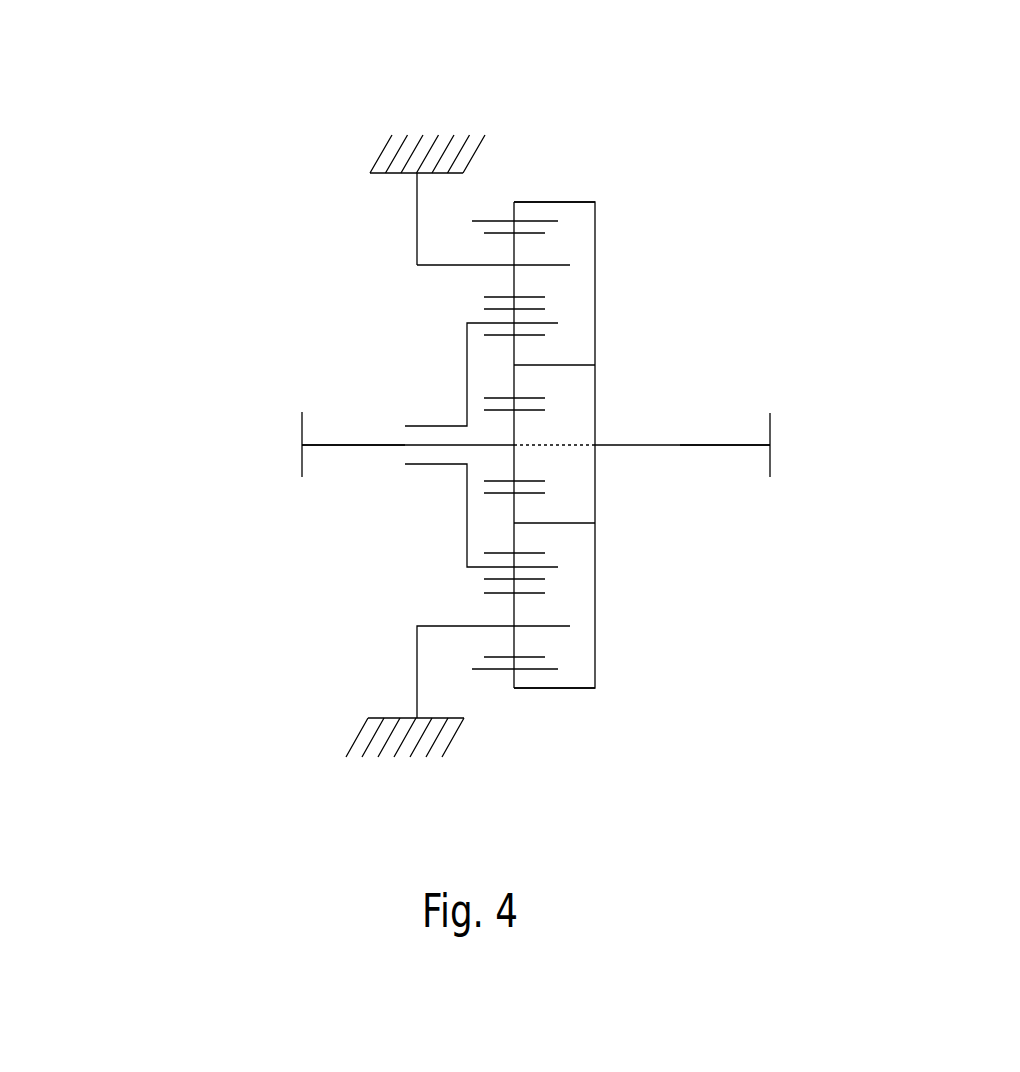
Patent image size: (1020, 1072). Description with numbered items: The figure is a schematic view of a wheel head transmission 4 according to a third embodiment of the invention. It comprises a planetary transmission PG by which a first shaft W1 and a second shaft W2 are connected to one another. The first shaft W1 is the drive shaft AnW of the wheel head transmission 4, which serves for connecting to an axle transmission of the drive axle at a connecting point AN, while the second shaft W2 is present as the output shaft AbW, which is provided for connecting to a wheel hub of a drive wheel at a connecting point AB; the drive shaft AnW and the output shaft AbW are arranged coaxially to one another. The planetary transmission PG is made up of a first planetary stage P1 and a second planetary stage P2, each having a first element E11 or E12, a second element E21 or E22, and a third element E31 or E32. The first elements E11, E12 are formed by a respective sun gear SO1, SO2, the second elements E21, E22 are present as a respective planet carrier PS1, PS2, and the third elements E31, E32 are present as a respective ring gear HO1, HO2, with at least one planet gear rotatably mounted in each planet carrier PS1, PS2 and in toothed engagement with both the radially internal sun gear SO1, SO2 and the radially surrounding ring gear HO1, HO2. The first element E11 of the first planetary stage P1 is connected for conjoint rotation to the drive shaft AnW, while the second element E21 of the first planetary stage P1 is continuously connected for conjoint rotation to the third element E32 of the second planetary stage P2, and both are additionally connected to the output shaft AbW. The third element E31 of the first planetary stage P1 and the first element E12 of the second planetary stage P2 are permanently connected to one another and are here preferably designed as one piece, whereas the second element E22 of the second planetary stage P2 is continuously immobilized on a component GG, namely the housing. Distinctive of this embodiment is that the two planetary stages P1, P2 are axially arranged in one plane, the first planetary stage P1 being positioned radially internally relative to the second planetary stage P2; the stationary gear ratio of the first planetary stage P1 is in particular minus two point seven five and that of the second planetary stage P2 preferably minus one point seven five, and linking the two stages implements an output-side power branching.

The wheel head transmission 4 is at (121, 151).
The planetary transmission PG is at (507, 82).
The component for conjoint rotation GG is at (417, 150).
The third element of the second planetary stage E32 is at (514, 202).
The second planetary stage P2 is at (592, 167).
The second element of the second planetary stage E22 is at (425, 265).
The first element of the second planetary stage E12 is at (510, 314).
The third element of the first planetary stage E31 is at (470, 325).
The second element of the first planetary stage E21 is at (573, 365).
The first element of the first planetary stage E11 is at (516, 432).
The sun gear SO1 is at (516, 460).
The planet carrier PS1 is at (578, 523).
The first planetary stage P1 is at (449, 479).
The ring gear HO1 is at (467, 567).
The sun gear SO2 is at (517, 572).
The planet carrier PS2 is at (417, 626).
The ring gear HO2 is at (514, 672).
The connecting point AN is at (271, 424).
The drive shaft AnW is at (322, 445).
The first shaft W1 is at (350, 447).
The output shaft AbW is at (740, 445).
The second shaft W2 is at (735, 447).
The connecting point AB is at (792, 424).